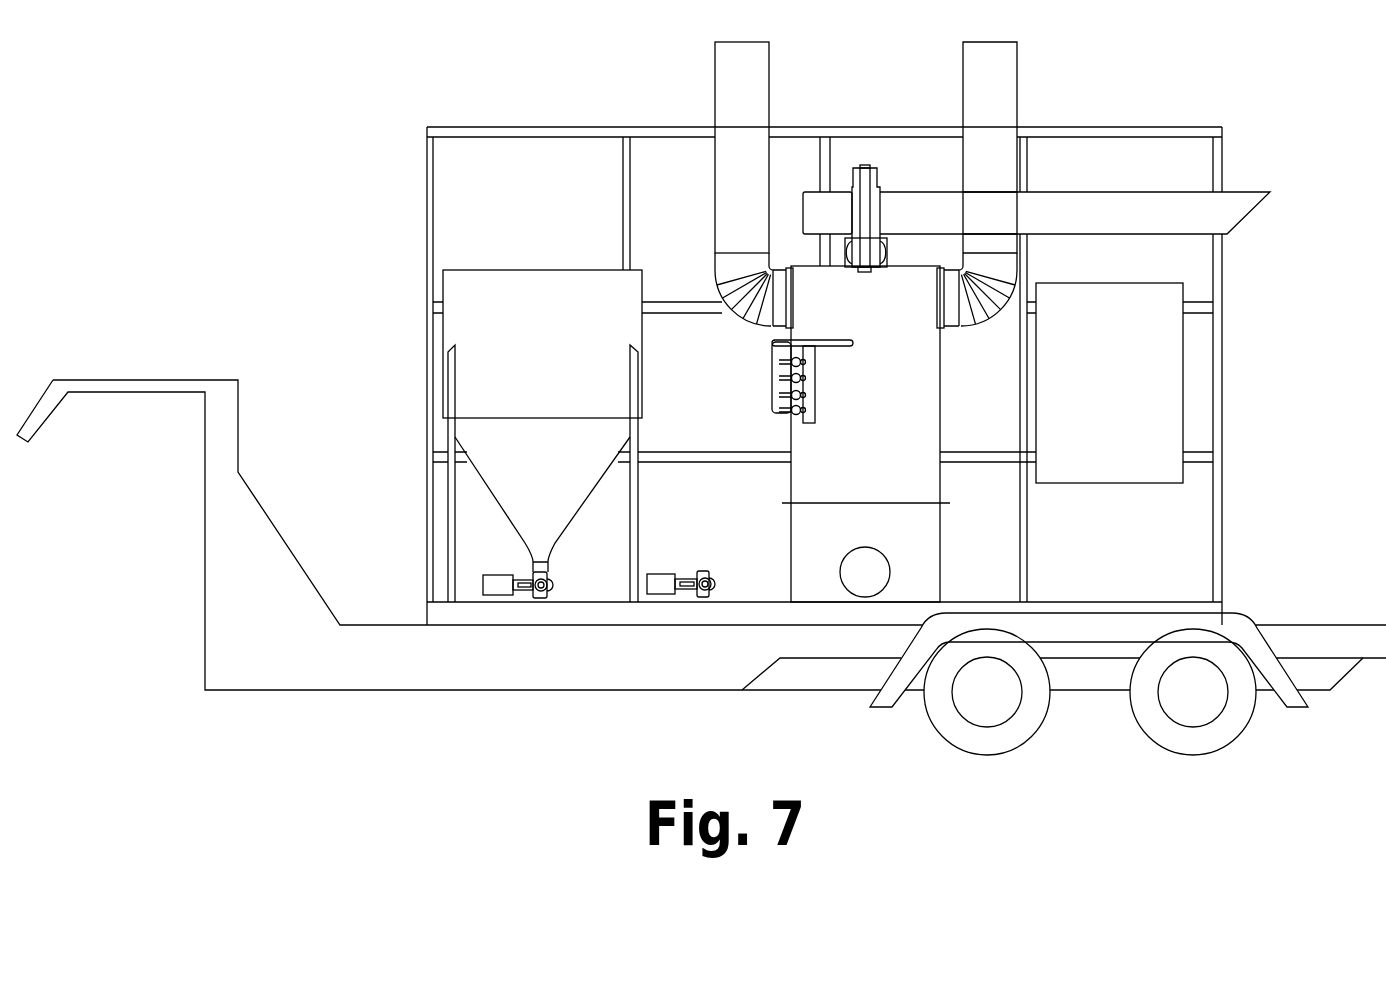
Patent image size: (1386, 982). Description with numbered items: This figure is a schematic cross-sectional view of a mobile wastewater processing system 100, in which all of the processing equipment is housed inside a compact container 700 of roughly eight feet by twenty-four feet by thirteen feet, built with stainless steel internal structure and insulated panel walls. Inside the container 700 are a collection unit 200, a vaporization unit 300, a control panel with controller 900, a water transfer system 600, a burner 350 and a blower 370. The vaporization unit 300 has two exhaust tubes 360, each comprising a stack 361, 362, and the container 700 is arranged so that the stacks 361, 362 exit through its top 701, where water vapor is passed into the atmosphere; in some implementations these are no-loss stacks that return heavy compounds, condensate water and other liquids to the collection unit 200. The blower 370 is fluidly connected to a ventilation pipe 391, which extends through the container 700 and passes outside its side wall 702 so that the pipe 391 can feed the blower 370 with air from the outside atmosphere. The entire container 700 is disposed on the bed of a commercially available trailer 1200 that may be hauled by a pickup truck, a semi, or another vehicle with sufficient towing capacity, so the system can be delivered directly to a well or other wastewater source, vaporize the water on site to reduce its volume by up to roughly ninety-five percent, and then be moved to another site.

The mobile processing system 100 is at (444, 50).
The collection unit 200 is at (562, 338).
The vaporization unit 300 is at (888, 408).
The burner 350 is at (886, 253).
The exhaust tubes 360 is at (763, 166).
The stack 361 is at (715, 83).
The stack 362 is at (1018, 85).
The blower 370 is at (879, 176).
The ventilation pipe 391 is at (1230, 203).
The water transfer system 600 is at (670, 532).
The container 700 is at (427, 212).
The top 701 is at (566, 127).
The side wall 702 is at (1223, 488).
The control panel with controller 900 is at (1128, 382).
The trailer 1200 is at (1320, 625).